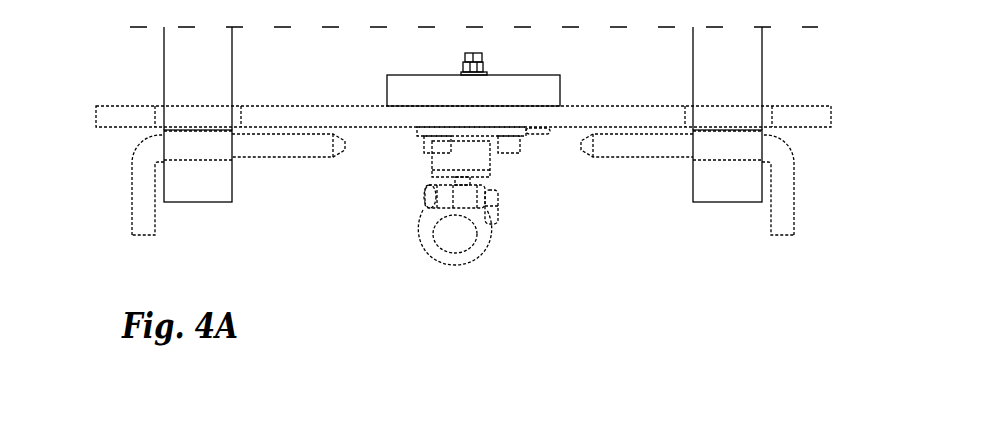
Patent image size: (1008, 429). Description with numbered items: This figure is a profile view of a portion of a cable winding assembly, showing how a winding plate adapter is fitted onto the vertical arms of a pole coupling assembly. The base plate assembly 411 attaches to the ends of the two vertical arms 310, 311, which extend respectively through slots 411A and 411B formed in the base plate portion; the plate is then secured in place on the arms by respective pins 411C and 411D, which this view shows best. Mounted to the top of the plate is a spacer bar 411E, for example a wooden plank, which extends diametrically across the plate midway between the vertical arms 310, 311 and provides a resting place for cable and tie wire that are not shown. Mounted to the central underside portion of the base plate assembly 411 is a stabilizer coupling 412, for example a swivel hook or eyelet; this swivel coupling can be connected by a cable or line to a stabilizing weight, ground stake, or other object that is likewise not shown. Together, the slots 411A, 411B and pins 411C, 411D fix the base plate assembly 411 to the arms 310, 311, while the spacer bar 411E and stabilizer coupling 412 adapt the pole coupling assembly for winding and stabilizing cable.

The vertical arm 310 is at (164, 82).
The vertical arm 311 is at (762, 82).
The base plate assembly 411 is at (812, 115).
The slot 411A is at (155, 115).
The slot 411B is at (685, 120).
The pin 411C is at (133, 190).
The pin 411D is at (787, 192).
The spacer bar 411E is at (443, 90).
The stabilizer coupling 412 is at (430, 210).